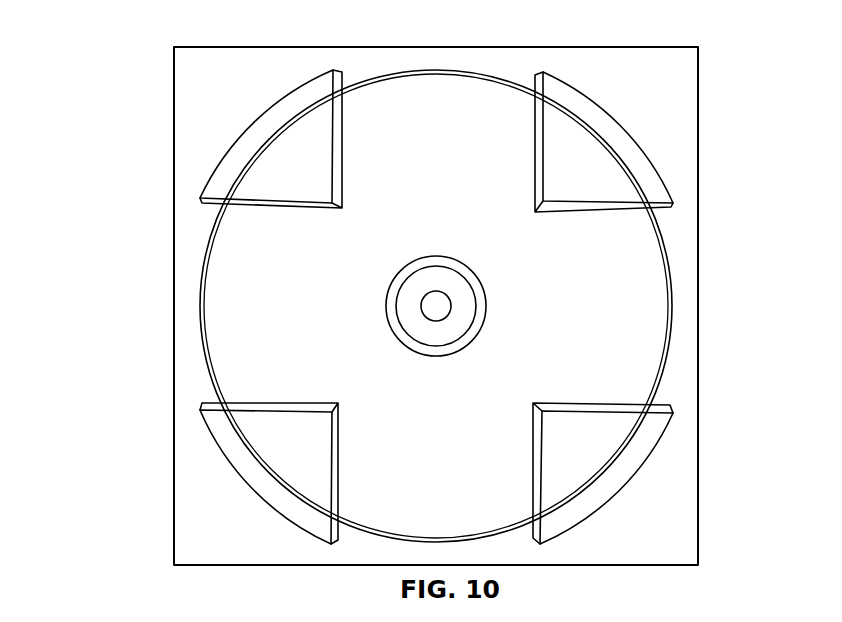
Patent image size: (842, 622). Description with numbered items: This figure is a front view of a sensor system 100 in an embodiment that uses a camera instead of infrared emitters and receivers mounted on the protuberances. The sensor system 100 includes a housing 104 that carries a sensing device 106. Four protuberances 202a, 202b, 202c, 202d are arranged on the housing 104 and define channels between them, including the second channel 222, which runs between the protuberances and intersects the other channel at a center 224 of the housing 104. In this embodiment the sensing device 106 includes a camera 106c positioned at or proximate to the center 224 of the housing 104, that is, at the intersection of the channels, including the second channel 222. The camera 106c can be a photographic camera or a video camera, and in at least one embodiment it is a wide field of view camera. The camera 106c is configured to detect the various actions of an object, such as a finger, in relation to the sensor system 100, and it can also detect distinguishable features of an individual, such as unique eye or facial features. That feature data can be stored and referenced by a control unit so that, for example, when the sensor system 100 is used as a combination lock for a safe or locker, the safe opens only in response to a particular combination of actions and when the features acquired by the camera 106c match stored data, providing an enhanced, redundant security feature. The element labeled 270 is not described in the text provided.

The sensor system 100 is at (118, 58).
The housing 104 is at (210, 370).
The sensing device 106 is at (488, 307).
The camera 106c is at (477, 287).
The protuberance 202a is at (278, 100).
The protuberance 202b is at (612, 112).
The protuberance 202c is at (635, 475).
The protuberance 202d is at (253, 490).
The second channel 222 is at (487, 73).
The center 224 is at (424, 256).
The rim 270 is at (201, 320).